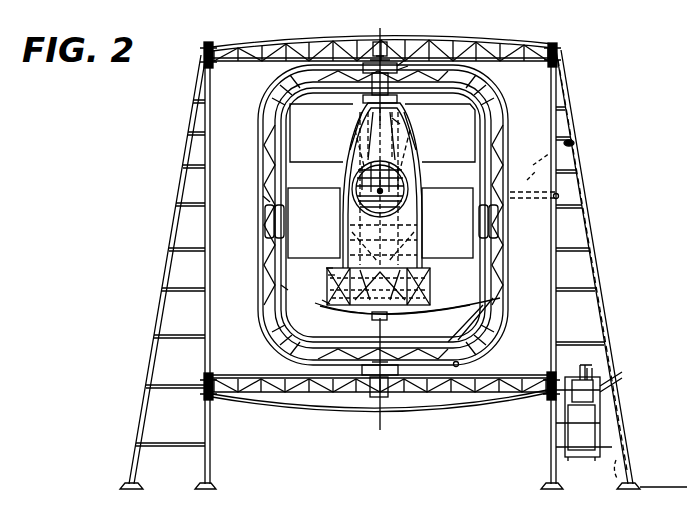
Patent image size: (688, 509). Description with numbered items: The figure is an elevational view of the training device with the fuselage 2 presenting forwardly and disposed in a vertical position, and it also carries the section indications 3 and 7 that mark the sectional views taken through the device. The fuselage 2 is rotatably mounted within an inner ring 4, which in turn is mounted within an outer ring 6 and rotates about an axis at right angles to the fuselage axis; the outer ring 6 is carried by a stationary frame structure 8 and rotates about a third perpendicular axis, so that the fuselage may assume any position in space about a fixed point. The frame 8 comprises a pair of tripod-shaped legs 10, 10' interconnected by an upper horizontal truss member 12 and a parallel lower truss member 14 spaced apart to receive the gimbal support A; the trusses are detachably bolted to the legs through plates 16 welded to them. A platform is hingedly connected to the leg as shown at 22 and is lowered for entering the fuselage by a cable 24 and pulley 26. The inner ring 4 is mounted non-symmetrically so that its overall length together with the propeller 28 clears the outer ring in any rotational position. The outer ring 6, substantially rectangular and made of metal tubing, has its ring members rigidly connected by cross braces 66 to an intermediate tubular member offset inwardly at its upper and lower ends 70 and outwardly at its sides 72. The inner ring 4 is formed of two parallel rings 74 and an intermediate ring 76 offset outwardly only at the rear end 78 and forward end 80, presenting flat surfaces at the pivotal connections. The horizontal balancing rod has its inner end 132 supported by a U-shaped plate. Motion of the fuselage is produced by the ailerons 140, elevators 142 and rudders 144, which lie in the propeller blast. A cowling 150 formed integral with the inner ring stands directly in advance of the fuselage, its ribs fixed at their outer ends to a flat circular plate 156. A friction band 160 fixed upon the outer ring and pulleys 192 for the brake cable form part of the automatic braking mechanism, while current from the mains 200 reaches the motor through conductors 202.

The fuselage 2 is at (410, 193).
The section line 3 is at (480, 88).
The inner ring 4 is at (486, 170).
The outer ring 6 is at (378, 30).
The section line 7 is at (380, 335).
The stationary frame structure 8 is at (370, 267).
The leg 10 is at (621, 269).
The leg 10' is at (163, 272).
The upper truss member 12 is at (518, 45).
The lower truss member 14 is at (463, 405).
The plates 16 is at (560, 48).
The hinged connection 22 is at (558, 195).
The cable 24 is at (615, 480).
The pulley 26 is at (574, 143).
The propeller 28 is at (428, 314).
The cross braces 66 is at (262, 259).
The upper and lower ends 70 is at (412, 72).
The sides 72 is at (262, 232).
The parallelly arranged rings 74 is at (328, 272).
The intermediate ring 76 is at (283, 288).
The rear end 78 is at (350, 60).
The forward end 80 is at (320, 303).
The inner end 132 is at (328, 276).
The ailerons 140 is at (380, 223).
The elevators 142 is at (382, 133).
The rudders 144 is at (395, 120).
The cowling 150 is at (428, 273).
The flat circular plate 156 is at (486, 304).
The friction band 160 is at (380, 365).
The pulleys 192 is at (456, 362).
The mains 200 is at (585, 367).
The conductors 202 is at (403, 57).
The gimbal support A is at (265, 198).